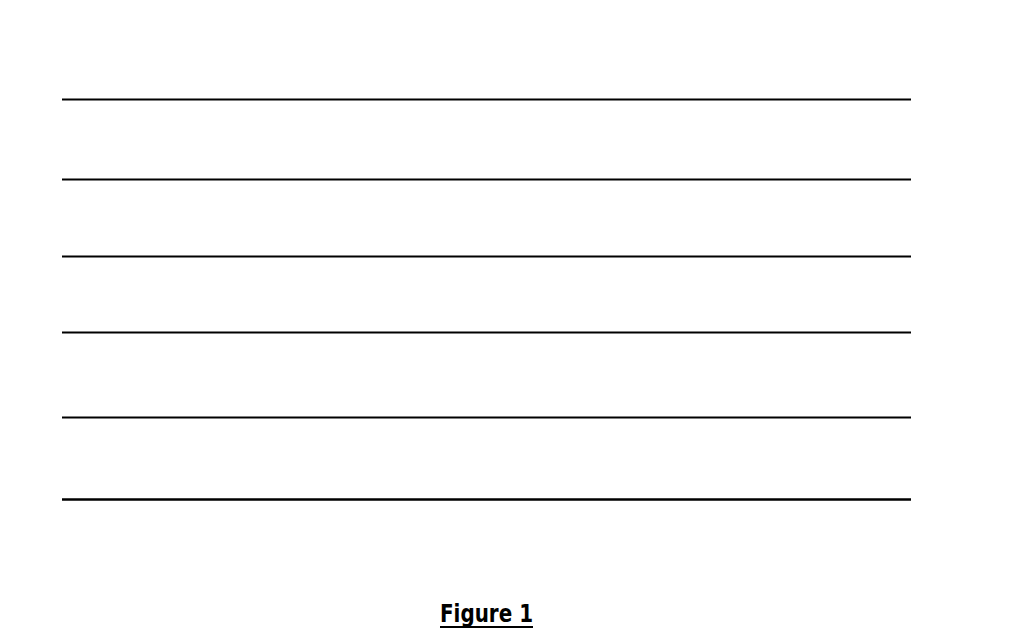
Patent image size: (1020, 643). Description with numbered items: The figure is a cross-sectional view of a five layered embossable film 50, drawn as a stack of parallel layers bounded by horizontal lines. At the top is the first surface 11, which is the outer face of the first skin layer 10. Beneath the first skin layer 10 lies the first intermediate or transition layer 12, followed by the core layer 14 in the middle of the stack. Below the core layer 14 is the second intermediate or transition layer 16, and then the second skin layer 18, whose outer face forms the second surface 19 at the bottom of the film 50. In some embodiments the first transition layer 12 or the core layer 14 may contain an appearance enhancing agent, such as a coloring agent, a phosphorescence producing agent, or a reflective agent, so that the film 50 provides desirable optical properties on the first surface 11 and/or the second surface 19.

The five layered film 50 is at (232, 71).
The first surface 11 is at (497, 99).
The first skin layer 10 is at (501, 153).
The first intermediate or transition layer 12 is at (501, 233).
The core layer 14 is at (501, 287).
The second intermediate or transition layer 16 is at (501, 367).
The second skin layer 18 is at (501, 452).
The second surface 19 is at (497, 500).